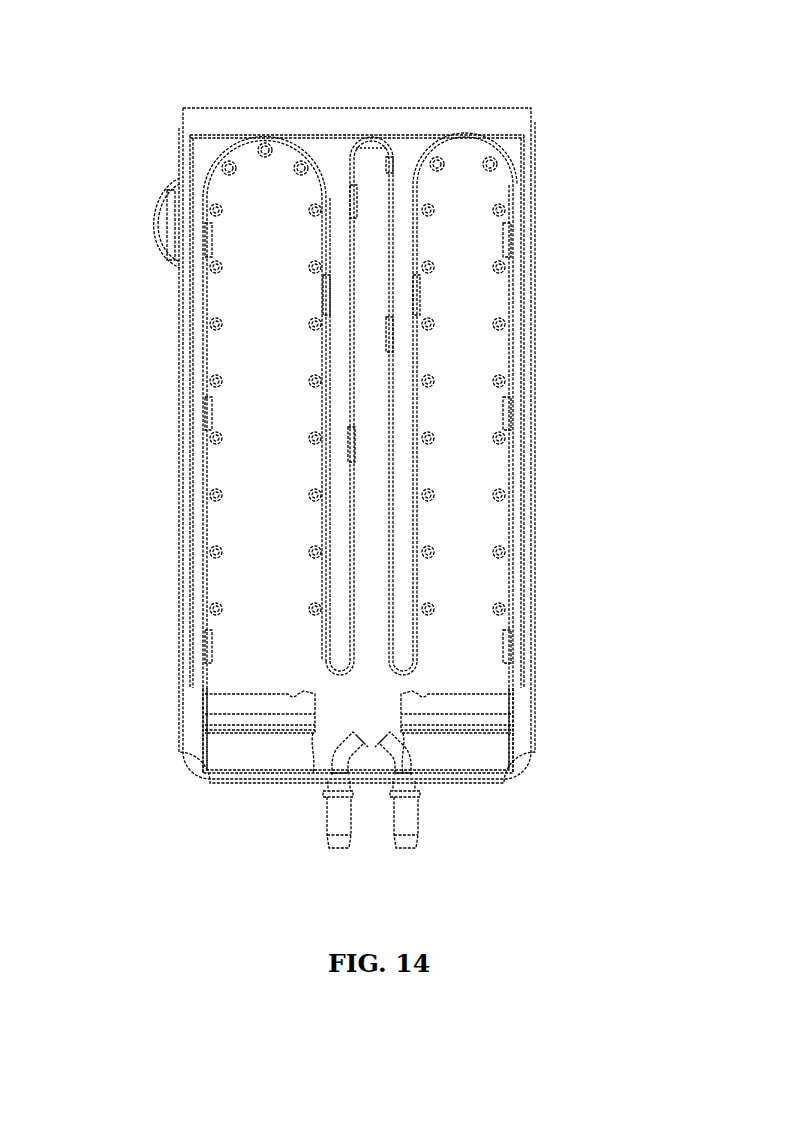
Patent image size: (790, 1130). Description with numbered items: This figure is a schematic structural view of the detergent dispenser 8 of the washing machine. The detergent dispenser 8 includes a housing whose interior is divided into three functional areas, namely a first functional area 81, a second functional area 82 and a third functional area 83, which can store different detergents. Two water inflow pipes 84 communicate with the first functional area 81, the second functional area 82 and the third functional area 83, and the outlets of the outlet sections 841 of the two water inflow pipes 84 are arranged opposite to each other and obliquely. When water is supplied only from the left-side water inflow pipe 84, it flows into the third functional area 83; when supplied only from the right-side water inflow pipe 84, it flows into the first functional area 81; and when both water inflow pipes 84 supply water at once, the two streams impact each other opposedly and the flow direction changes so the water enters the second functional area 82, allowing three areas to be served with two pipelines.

The detergent dispenser 8 is at (398, 62).
The first functional area 81 is at (257, 513).
The second functional area 82 is at (367, 413).
The third functional area 83 is at (510, 488).
The water inflow pipe 84 is at (408, 818).
The outlet section 841 is at (417, 782).